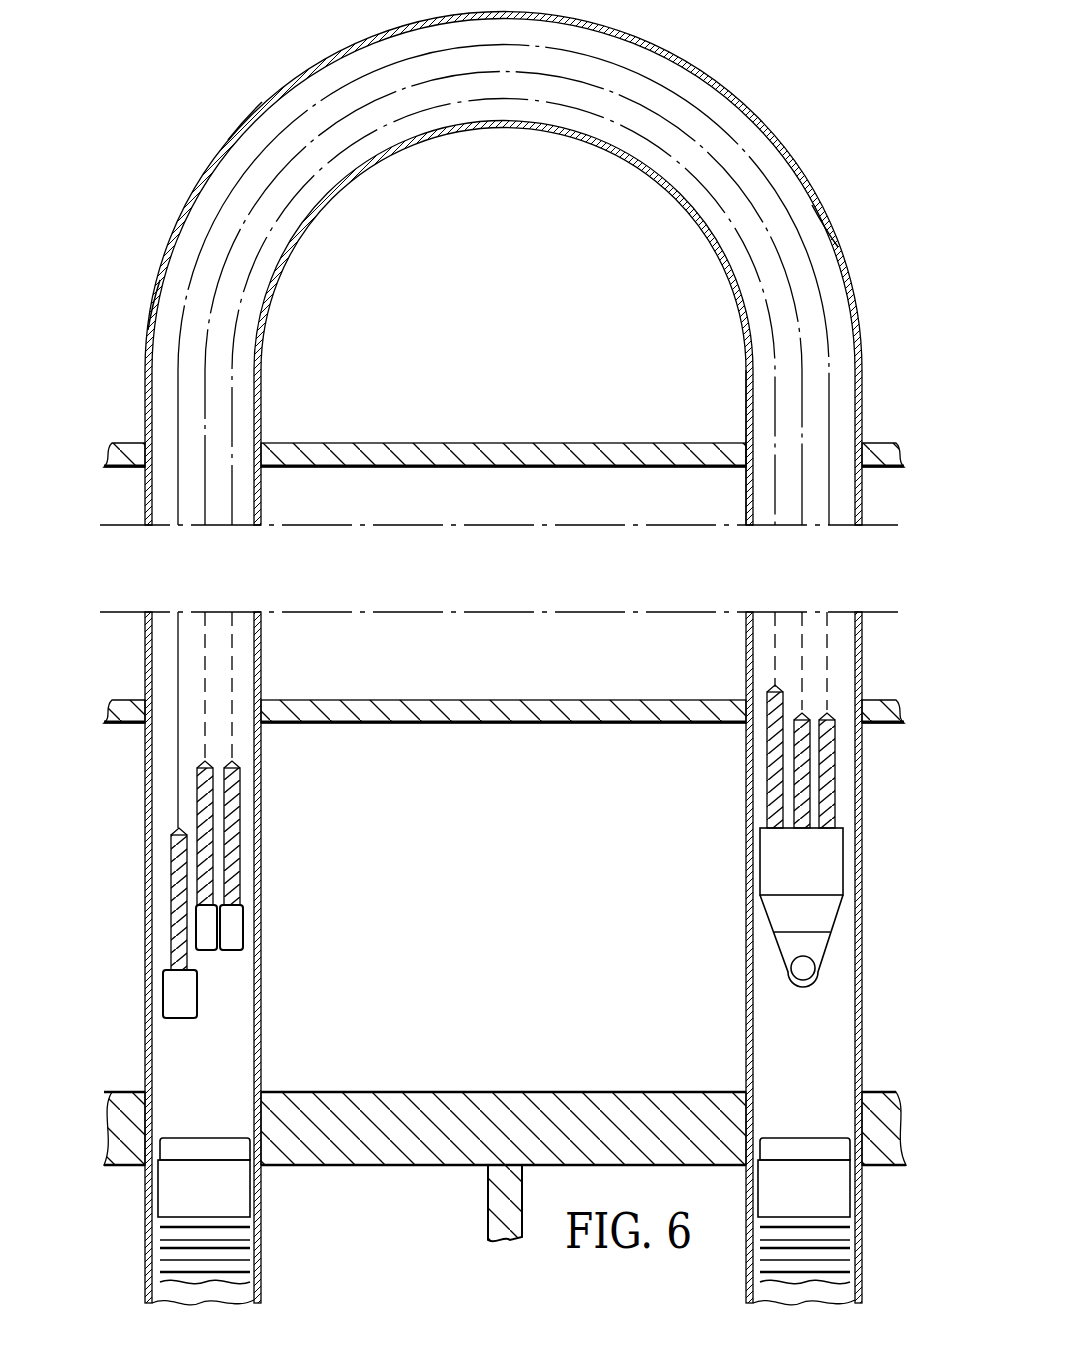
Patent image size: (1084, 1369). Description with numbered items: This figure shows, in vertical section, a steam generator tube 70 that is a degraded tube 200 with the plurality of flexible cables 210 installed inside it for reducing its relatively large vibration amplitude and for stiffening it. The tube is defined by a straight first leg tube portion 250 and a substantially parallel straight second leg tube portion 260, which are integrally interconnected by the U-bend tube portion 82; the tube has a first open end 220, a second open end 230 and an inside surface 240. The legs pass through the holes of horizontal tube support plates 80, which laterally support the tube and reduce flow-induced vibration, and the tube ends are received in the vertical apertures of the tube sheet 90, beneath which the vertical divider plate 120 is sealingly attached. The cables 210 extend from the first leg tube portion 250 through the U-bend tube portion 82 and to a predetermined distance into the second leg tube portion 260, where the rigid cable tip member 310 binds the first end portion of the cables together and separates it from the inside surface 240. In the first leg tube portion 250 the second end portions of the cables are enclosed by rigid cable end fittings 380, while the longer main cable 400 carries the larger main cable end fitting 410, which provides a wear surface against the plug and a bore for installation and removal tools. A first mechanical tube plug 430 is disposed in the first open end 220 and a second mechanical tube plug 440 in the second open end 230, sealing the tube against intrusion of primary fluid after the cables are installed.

The steam generator tube 70 is at (775, 138).
The U-bend tube portion 82 is at (235, 135).
The degraded tube 200 is at (838, 247).
The flexible cables 210 is at (703, 100).
The inside surface 240 is at (168, 268).
The first leg tube portion 250 is at (262, 499).
The second leg tube portion 260 is at (748, 503).
The tube support plate 80 is at (547, 698).
The tube sheet 90 is at (635, 1100).
The divider plate 120 is at (493, 1215).
The cable tip member 310 is at (787, 877).
The main cable 400 is at (178, 920).
The cable end fitting 380 is at (227, 953).
The main cable end fitting 410 is at (180, 1020).
The first mechanical tube plug 430 is at (244, 1247).
The second mechanical tube plug 440 is at (838, 1231).
The first open end 220 is at (180, 1287).
The second open end 230 is at (775, 1290).